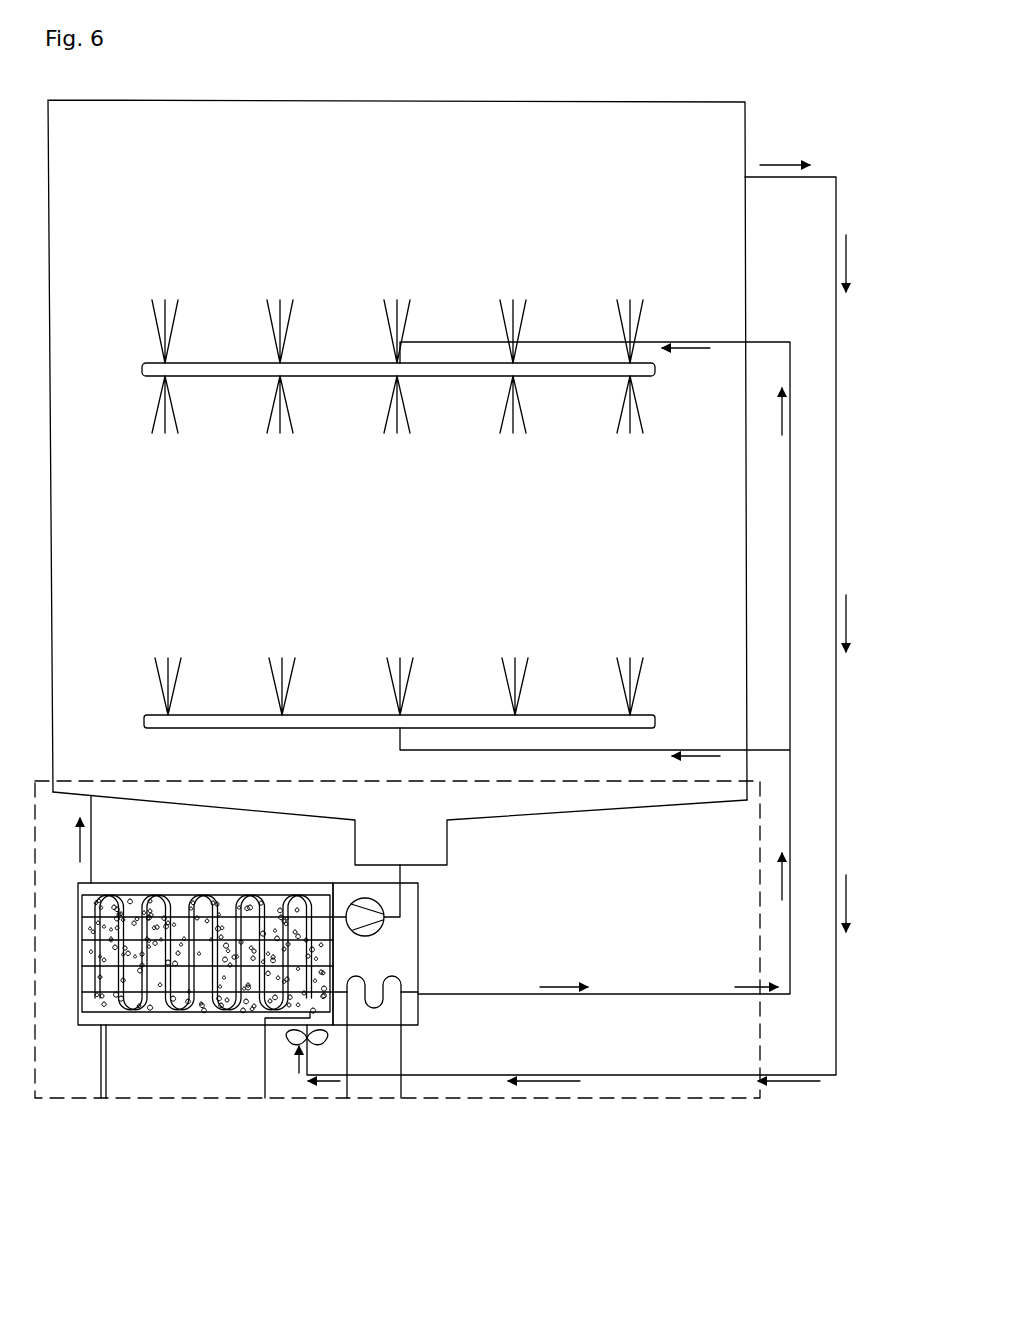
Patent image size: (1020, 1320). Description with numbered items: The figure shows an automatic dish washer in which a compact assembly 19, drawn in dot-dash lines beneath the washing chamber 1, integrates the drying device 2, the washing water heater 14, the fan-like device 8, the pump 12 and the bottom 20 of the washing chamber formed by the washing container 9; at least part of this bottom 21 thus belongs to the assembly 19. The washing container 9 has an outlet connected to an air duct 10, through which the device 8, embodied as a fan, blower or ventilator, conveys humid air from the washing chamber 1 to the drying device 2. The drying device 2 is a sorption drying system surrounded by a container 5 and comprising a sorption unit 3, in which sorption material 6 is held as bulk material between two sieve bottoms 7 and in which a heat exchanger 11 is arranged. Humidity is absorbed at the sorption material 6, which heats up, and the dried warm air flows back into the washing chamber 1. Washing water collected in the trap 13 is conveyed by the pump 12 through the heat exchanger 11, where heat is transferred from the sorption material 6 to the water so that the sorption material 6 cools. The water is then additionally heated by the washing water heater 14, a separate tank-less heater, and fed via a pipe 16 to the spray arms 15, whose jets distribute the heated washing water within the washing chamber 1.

The washing chamber 1 is at (450, 168).
The drying device 2 is at (190, 908).
The sorption unit 3 is at (248, 1018).
The container 5 is at (391, 1027).
The sorption material 6 is at (162, 1008).
The sieve bottoms 7 is at (247, 1016).
The device 8 is at (313, 1042).
The washing container 9 is at (674, 103).
The air duct 10 is at (635, 1075).
The heat exchanger 11 is at (226, 912).
The pump 12 is at (356, 906).
The trap 13 is at (432, 838).
The washing water heater 14 is at (398, 1042).
The spray arms 15 is at (357, 372).
The pipe 16 is at (757, 343).
The assembly 19 is at (64, 1102).
The bottom of the washing chamber 20 is at (403, 897).
The bottom 21 is at (560, 810).